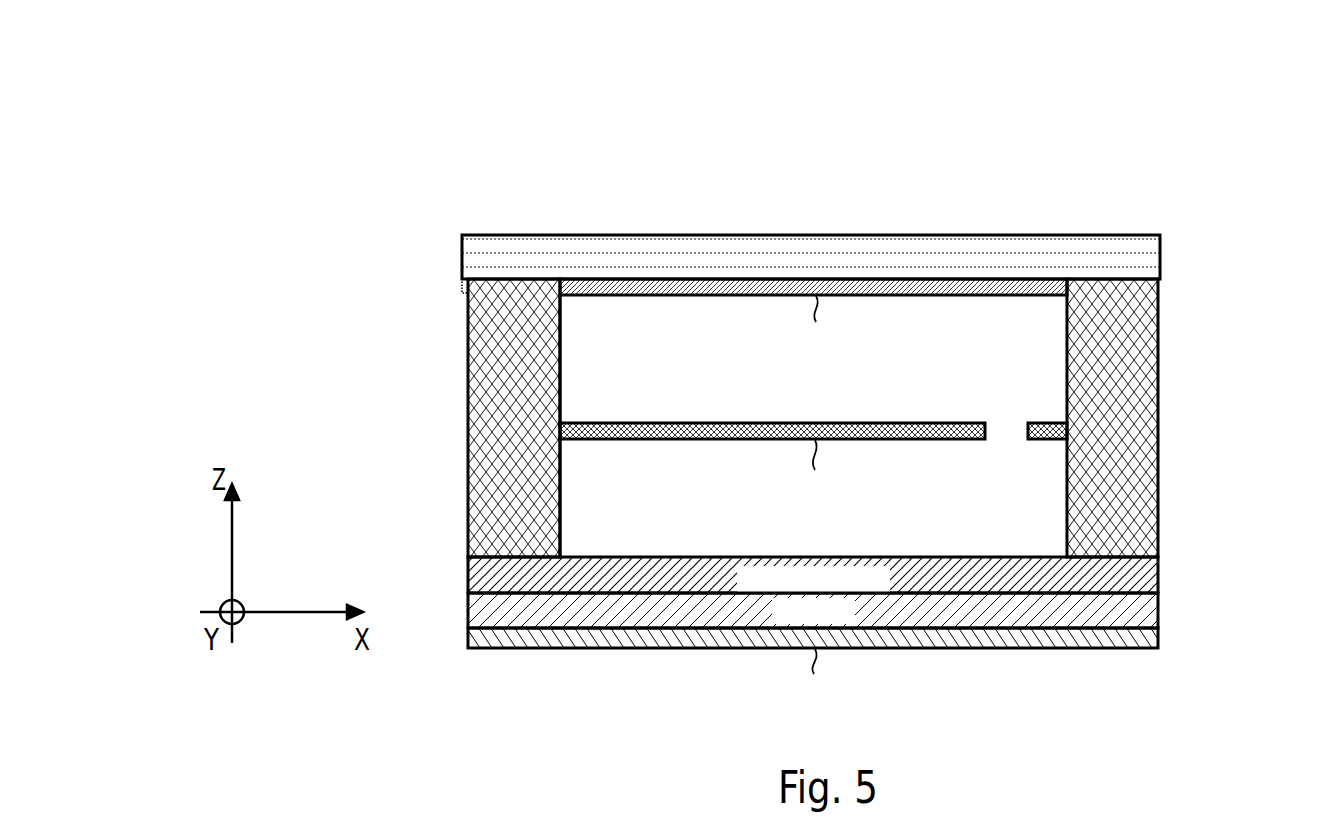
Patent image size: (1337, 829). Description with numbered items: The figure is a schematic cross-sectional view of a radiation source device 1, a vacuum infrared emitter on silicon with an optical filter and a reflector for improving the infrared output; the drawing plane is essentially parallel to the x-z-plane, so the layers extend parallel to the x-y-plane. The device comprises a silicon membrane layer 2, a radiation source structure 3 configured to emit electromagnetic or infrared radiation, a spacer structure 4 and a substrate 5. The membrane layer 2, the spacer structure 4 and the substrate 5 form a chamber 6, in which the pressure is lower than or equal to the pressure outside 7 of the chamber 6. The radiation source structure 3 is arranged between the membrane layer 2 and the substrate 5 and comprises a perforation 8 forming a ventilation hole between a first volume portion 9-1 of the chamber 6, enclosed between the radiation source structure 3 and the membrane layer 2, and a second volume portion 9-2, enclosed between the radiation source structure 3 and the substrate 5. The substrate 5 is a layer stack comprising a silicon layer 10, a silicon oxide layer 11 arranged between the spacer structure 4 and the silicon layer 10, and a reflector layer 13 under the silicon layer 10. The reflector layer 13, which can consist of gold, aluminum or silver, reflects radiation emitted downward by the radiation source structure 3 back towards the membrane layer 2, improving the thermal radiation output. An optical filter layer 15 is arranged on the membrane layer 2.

The radiation source device 1 is at (1303, 87).
The membrane layer 2 is at (1036, 293).
The radiation source structure 3 is at (650, 420).
The spacer structure 4 is at (1112, 462).
The substrate 5 is at (879, 629).
The chamber 6 is at (595, 318).
The outside 7 is at (446, 299).
The perforation 8 is at (1008, 437).
The first volume portion 9-1 is at (959, 367).
The second volume portion 9-2 is at (959, 499).
The silicon layer 10 is at (1158, 608).
The silicon oxide layer 11 is at (1158, 578).
The reflector layer 13 is at (857, 667).
The optical filter layer 15 is at (1140, 263).